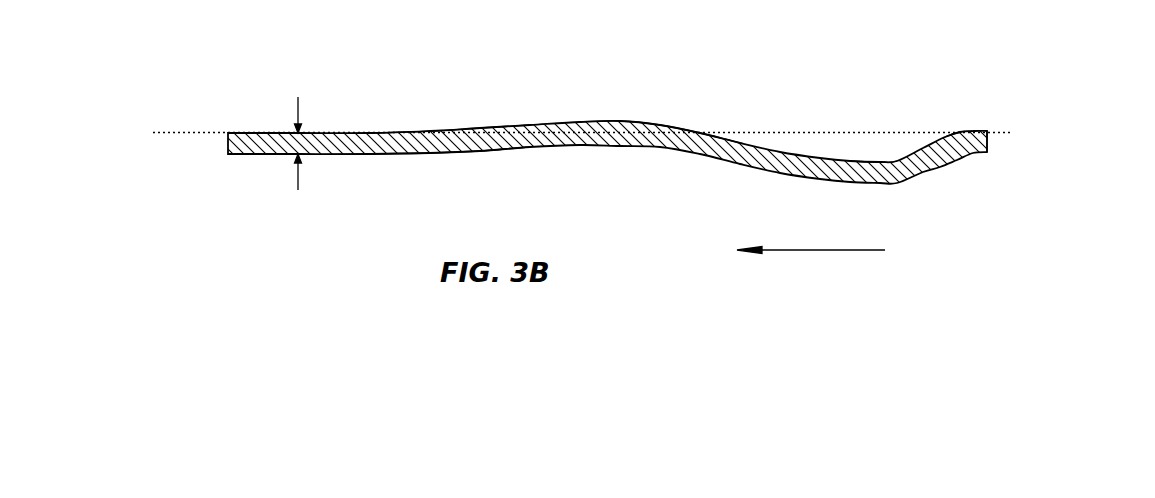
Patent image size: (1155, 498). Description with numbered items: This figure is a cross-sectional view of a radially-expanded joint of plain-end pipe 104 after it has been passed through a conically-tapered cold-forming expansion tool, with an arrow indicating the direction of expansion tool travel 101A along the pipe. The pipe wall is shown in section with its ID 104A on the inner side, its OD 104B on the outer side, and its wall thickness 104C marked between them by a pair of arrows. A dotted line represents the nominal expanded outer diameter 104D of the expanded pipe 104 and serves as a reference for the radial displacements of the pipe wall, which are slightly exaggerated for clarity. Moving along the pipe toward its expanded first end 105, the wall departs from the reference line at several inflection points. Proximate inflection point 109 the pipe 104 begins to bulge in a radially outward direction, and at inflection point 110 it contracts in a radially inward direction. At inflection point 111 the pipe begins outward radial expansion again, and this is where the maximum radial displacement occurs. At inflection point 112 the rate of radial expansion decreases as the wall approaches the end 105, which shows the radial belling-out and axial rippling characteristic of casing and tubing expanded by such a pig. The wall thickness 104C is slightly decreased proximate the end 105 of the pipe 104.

The direction of expansion tool travel 101A is at (830, 250).
The expanded plain-end pipe 104 is at (387, 155).
The ID 104A is at (485, 155).
The OD 104B is at (485, 130).
The wall thickness 104C is at (297, 130).
The nominal expanded outer diameter 104D is at (188, 132).
The first end 105 is at (988, 141).
The inflection point 109 is at (610, 122).
The inflection point 110 is at (685, 130).
The inflection point 111 is at (880, 162).
The inflection point 112 is at (957, 132).